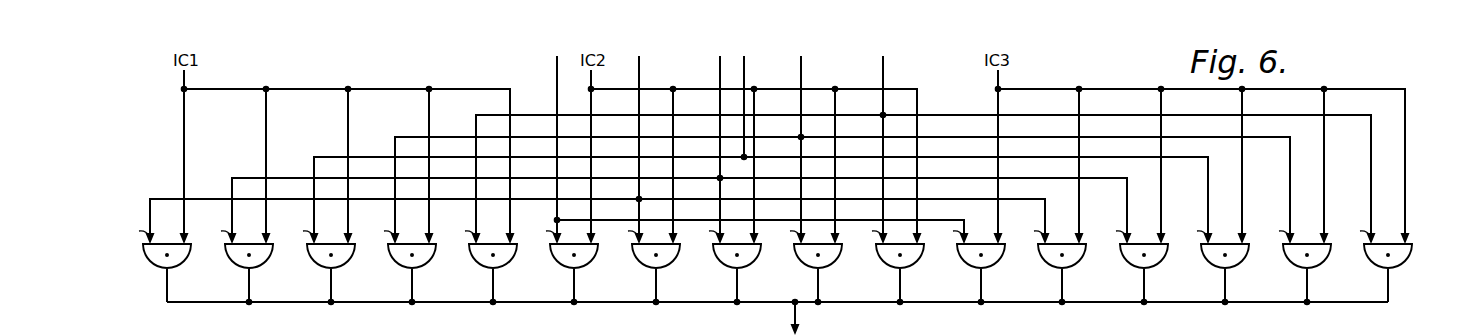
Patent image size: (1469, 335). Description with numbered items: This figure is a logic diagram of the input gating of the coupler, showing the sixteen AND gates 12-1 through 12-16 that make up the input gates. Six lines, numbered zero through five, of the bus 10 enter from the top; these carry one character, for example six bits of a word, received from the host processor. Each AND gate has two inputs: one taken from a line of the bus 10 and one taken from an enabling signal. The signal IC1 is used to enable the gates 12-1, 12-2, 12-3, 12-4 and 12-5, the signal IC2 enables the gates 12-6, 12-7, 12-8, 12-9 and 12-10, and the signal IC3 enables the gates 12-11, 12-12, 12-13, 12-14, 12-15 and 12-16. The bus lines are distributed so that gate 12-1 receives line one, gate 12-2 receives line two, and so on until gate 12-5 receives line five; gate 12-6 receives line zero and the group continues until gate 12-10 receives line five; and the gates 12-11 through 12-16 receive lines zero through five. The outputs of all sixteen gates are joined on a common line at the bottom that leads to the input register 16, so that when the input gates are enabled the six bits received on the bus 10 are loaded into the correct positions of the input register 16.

The bus 10 is at (900, 45).
The input register 16 is at (806, 311).
The AND gate 12-1 is at (171, 270).
The AND gate 12-2 is at (253, 270).
The AND gate 12-3 is at (335, 270).
The AND gate 12-4 is at (416, 270).
The AND gate 12-5 is at (497, 270).
The AND gate 12-6 is at (578, 270).
The AND gate 12-7 is at (660, 270).
The AND gate 12-8 is at (741, 270).
The AND gate 12-9 is at (822, 270).
The AND gate 12-10 is at (904, 270).
The AND gate 12-11 is at (985, 270).
The AND gate 12-12 is at (1066, 270).
The AND gate 12-13 is at (1148, 270).
The AND gate 12-14 is at (1229, 270).
The AND gate 12-15 is at (1311, 270).
The AND gate 12-16 is at (1392, 270).